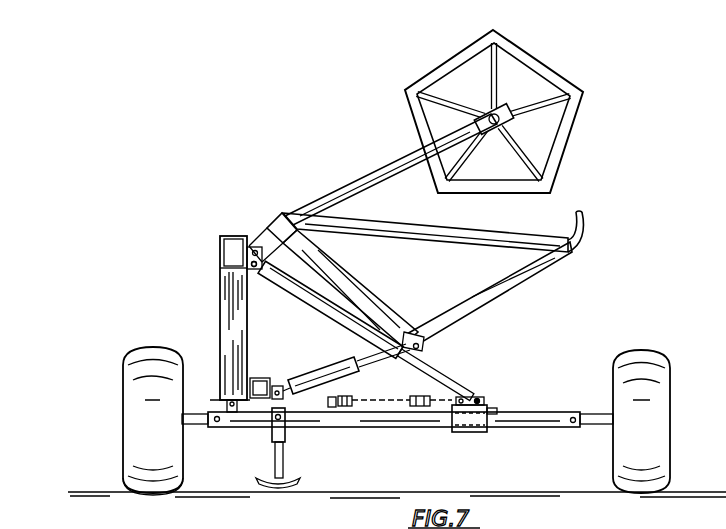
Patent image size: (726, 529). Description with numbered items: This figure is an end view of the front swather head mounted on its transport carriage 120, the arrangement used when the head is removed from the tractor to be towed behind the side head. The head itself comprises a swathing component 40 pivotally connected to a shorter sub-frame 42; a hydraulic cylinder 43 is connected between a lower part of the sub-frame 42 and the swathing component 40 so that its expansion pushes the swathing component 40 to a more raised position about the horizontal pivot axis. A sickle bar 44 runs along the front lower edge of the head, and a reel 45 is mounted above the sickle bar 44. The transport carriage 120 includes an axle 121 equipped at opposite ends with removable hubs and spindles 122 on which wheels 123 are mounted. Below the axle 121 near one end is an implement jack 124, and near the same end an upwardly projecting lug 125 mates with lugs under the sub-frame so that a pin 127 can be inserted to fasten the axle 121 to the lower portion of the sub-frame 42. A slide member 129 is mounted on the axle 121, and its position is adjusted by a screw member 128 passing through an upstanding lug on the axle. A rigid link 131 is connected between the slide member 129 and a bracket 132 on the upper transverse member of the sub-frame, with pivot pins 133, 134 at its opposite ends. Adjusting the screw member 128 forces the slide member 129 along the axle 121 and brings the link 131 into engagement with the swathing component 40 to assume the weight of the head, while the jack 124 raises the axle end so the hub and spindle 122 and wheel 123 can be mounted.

The swathing component 40 is at (474, 306).
The sub-frame 42 is at (216, 306).
The hydraulic cylinder 43 is at (311, 374).
The sickle bar 44 is at (570, 249).
The reel 45 is at (568, 142).
The transport carriage 120 is at (549, 393).
The axle 121 is at (522, 424).
The hubs and spindles 122 is at (197, 427).
The wheels 123 is at (137, 405).
The implement jack 124 is at (284, 447).
The upwardly projecting lug 125 is at (230, 411).
The pin 127 is at (226, 404).
The screw member 128 is at (383, 405).
The slide member 129 is at (345, 392).
The rigid link 131 is at (432, 370).
The bracket 132 is at (253, 269).
The pin 133 is at (476, 399).
The pin 134 is at (256, 250).